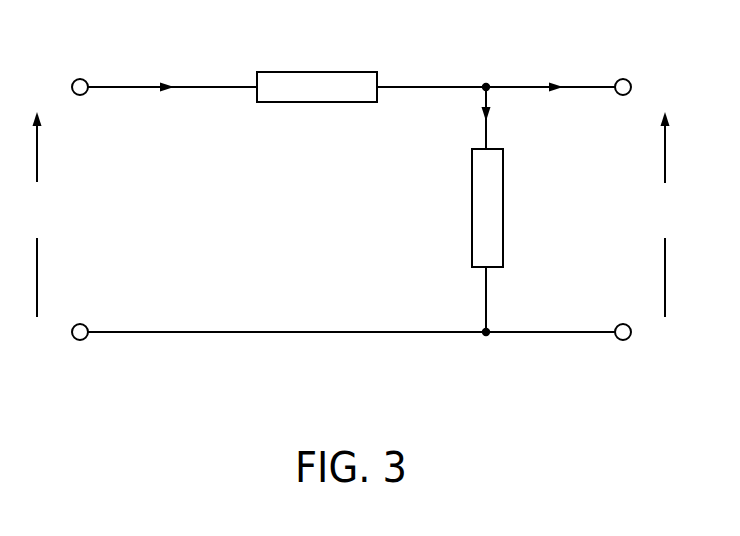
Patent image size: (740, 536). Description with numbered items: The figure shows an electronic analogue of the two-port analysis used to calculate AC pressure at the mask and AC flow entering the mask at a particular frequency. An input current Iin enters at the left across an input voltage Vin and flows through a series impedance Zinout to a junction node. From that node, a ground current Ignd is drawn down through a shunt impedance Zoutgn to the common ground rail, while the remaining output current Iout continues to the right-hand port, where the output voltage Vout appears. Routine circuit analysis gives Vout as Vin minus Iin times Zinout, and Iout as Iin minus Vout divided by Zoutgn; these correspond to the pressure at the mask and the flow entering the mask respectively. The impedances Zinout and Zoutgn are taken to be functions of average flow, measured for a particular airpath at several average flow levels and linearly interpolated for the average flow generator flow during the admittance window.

The input current Iin is at (164, 66).
The input-output impedance Zinout is at (318, 61).
The output current Iout is at (504, 66).
The ground current Ignd is at (520, 118).
The output-ground impedance Zoutgn is at (536, 240).
The input voltage Vin is at (36, 214).
The output voltage Vout is at (675, 214).